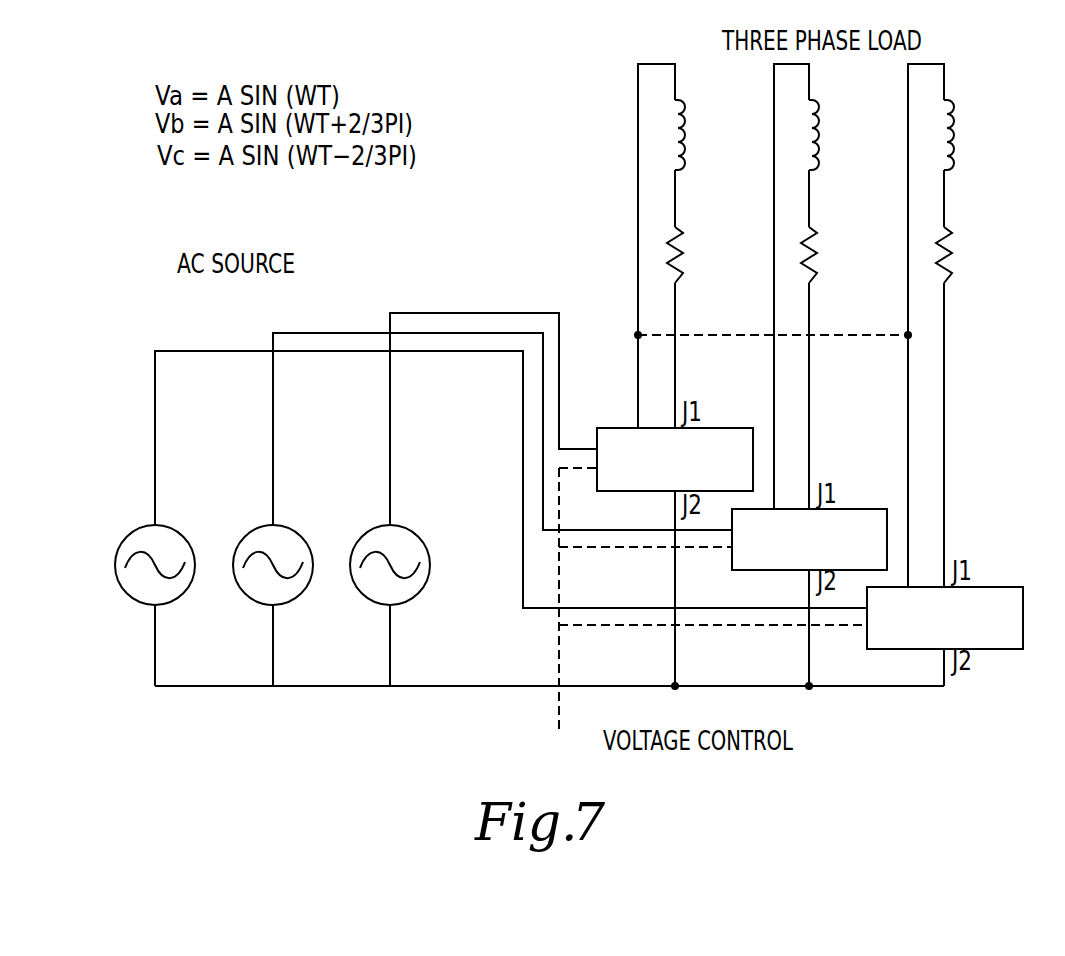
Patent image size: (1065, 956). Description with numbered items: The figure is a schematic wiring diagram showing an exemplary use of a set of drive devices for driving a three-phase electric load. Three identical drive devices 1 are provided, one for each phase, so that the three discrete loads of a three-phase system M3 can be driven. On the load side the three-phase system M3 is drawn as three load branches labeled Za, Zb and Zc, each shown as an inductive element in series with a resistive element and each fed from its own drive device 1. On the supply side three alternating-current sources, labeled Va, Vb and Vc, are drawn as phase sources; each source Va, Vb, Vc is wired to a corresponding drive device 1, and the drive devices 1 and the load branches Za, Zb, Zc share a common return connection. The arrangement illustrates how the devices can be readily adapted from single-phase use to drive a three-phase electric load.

The drive device 1 is at (725, 442).
The three-phase system M3 is at (836, 360).
The load impedance phase a Za is at (959, 375).
The load impedance phase b Zb is at (824, 375).
The load impedance phase c Zc is at (689, 375).
The AC voltage source phase a Va is at (491, 518).
The AC voltage source phase b Vb is at (482, 509).
The AC voltage source phase c Vc is at (473, 499).